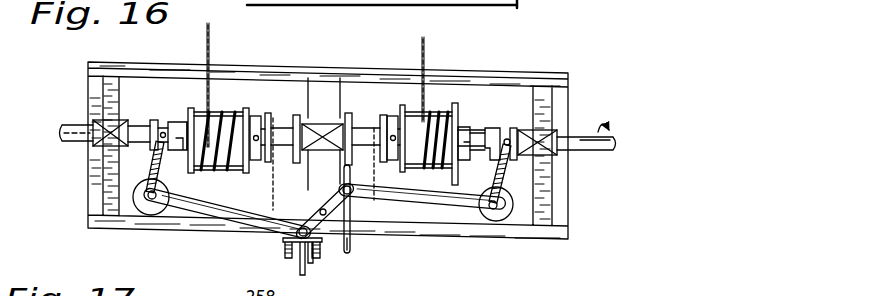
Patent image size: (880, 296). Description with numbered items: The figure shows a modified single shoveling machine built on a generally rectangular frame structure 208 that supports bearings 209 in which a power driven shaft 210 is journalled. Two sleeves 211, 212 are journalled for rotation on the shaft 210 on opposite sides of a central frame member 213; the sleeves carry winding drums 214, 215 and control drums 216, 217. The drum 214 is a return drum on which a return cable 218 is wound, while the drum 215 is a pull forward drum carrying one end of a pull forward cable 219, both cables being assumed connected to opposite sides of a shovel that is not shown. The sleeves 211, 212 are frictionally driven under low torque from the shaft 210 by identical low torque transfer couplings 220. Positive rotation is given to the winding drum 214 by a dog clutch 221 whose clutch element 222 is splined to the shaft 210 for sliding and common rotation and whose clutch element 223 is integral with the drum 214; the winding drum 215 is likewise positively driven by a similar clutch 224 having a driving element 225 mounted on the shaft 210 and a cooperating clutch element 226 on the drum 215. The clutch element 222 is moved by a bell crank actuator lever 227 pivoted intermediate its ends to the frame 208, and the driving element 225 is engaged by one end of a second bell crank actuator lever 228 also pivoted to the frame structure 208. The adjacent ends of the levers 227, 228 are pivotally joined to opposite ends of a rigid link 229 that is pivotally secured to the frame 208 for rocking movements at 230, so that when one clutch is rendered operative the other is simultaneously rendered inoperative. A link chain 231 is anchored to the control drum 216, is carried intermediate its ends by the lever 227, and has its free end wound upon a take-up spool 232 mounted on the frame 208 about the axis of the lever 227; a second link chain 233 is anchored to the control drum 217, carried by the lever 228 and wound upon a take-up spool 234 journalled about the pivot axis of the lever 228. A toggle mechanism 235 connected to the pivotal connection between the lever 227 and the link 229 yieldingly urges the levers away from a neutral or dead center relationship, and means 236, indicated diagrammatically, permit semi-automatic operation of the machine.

The frame structure 208 is at (202, 229).
The bearings 209 is at (100, 124).
The power driven shaft 210 is at (62, 131).
The sleeve 211 is at (258, 119).
The sleeve 212 is at (392, 119).
The central frame member 213 is at (306, 192).
The winding drum 214 is at (239, 110).
The winding drum 215 is at (453, 118).
The control drum 216 is at (295, 116).
The control drum 217 is at (359, 98).
The return cable 218 is at (207, 37).
The pull forward cable 219 is at (424, 45).
The low torque transfer couplings 220 is at (251, 175).
The dog clutch 221 is at (177, 121).
The clutch element 222 is at (177, 158).
The clutch element 223 is at (183, 147).
The clutch 224 is at (497, 124).
The driving element 225 is at (490, 160).
The clutch element 226 is at (470, 129).
The bell crank actuator lever 227 is at (188, 208).
The second bell crank actuator lever 228 is at (443, 204).
The rigid link 229 is at (335, 212).
The pivotal connection 230 is at (329, 208).
The link chain 231 is at (272, 176).
The take-up spool 232 is at (133, 198).
The link chain 233 is at (372, 195).
The take-up spool 234 is at (508, 204).
The toggle mechanism 235 is at (282, 256).
The semi-automatic operating means 236 is at (354, 246).